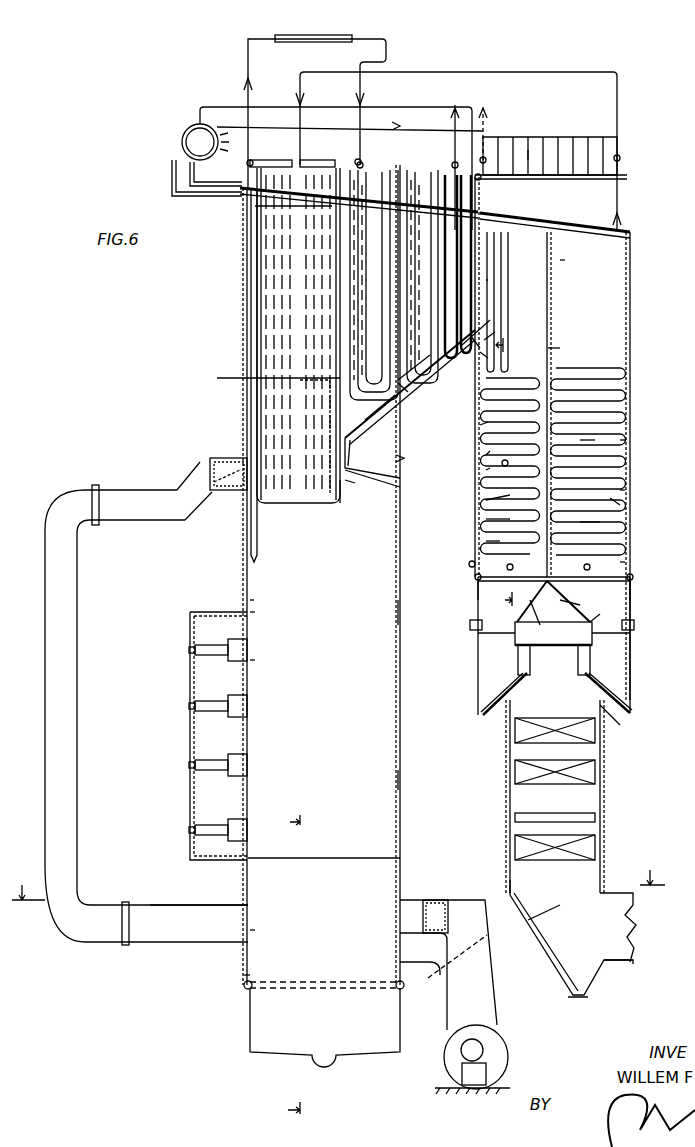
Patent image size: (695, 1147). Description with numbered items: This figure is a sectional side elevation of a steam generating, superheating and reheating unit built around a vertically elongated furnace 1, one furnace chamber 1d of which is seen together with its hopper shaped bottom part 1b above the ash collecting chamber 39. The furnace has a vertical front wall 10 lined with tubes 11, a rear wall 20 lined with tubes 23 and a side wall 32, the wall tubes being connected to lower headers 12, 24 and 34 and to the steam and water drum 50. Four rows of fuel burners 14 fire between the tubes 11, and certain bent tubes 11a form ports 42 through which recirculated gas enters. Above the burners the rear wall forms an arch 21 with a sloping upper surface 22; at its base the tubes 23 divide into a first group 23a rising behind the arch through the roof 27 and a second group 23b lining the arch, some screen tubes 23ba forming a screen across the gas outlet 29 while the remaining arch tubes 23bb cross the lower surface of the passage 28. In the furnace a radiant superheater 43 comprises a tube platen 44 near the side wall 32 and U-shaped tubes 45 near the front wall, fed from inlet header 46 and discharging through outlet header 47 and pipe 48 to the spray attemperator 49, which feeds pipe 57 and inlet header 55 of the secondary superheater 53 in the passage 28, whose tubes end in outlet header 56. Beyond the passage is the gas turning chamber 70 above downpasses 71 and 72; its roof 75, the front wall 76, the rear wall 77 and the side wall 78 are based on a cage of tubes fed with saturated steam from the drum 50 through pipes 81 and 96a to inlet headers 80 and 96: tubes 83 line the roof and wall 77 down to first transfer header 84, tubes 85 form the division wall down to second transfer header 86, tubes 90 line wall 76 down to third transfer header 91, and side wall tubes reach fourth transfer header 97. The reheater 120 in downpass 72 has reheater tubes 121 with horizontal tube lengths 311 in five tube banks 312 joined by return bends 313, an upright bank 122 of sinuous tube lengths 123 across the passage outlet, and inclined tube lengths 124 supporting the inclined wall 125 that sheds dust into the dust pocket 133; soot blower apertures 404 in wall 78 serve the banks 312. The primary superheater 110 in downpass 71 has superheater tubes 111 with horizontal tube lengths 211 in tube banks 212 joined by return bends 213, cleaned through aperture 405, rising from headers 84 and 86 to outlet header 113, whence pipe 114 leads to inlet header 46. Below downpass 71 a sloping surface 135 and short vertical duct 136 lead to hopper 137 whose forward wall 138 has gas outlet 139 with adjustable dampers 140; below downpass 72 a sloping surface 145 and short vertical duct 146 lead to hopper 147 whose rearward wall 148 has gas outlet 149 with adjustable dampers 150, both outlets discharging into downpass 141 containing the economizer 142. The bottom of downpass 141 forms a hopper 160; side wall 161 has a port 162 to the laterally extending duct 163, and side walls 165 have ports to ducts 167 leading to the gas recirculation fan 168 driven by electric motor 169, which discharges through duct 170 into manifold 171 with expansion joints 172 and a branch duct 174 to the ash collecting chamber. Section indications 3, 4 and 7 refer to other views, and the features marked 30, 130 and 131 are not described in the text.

The furnace 1 is at (321, 575).
The furnace chamber 1d is at (285, 650).
The lower furnace chamber 1b is at (288, 915).
The furnace combustion zone 32 is at (286, 641).
The ash hopper 39 is at (325, 1027).
The hopper joint 34 is at (300, 990).
The lower header 24 is at (244, 985).
The lower right header 12 is at (403, 985).
The rear furnace wall 20 is at (400, 612).
The rear wall tubes 23 is at (395, 780).
The downcomer pipe 10 is at (195, 470).
The pipe flange 172 is at (125, 945).
The supply pipe 171 is at (195, 925).
The header box 11a is at (220, 458).
The connection 42 is at (240, 475).
The front wall tubes 11 is at (250, 590).
The partition wall 45 is at (255, 412).
The section line 3 is at (338, 875).
The section line 4 is at (287, 968).
The section line 7 is at (504, 471).
The burners 14 is at (235, 830).
The riser pipe 48 is at (247, 62).
The steam drum 49 is at (342, 35).
The feed pipe 57 is at (360, 85).
The steam pipe 114 is at (580, 72).
The pipe connection 113 is at (620, 158).
The steam line 81 is at (236, 107).
The separator drum 50 is at (183, 135).
The header pipe 29 is at (350, 205).
The tube bank 47 is at (270, 166).
The tube bank 46 is at (322, 166).
The tube section 23ba is at (252, 377).
The lower panel 43 is at (298, 473).
The panel bottom 44 is at (332, 492).
The superheater bank 55 is at (362, 158).
The superheater bank 56 is at (452, 166).
The sloping partition 30 is at (432, 360).
The partition wall 28 is at (420, 377).
The tube section 23bb is at (425, 401).
The tube bend 22 is at (372, 458).
The tube bend 21 is at (372, 474).
The tube connection 53 is at (372, 440).
The tube section 23a is at (414, 458).
The tube section 23b is at (360, 490).
The separating wall 27 is at (480, 195).
The header 80 is at (481, 179).
The plate 96 is at (556, 178).
The connection 131 is at (486, 158).
The hatched plate 96a is at (533, 147).
The roof 83 is at (573, 228).
The outer wall 75 is at (600, 226).
The partition 85 is at (550, 245).
The convection section 70 is at (573, 273).
The gas pass 78 is at (537, 303).
The tube 123 is at (496, 245).
The tube 122 is at (503, 265).
The baffle 133 is at (490, 320).
The tube 125 is at (503, 331).
The tube 124 is at (483, 365).
The partition 90 is at (560, 348).
The heating surface 76 is at (490, 460).
The tube connection 404 is at (508, 462).
The tube 312 is at (485, 552).
The tube 72 is at (486, 455).
The tube 313 is at (486, 470).
The tube 311 is at (486, 500).
The tube 121 is at (486, 519).
The tube 120 is at (486, 541).
The header 130 is at (476, 579).
The wall 91 is at (478, 592).
The tube 212 is at (635, 548).
The tube connection 405 is at (583, 405).
The tube 213 is at (596, 440).
The tube 71 is at (622, 440).
The tube 77 is at (622, 490).
The tube 211 is at (622, 505).
The tube 110 is at (596, 522).
The tube 111 is at (622, 562).
The wall 84 is at (646, 594).
The hopper 86 is at (535, 600).
The hopper wall 135 is at (580, 598).
The hopper wall 136 is at (608, 609).
The hopper outlet 97 is at (542, 621).
The ash box 148 is at (553, 634).
The support 145 is at (520, 615).
The plate 138 is at (592, 640).
The outlet 150 is at (530, 660).
The outlet 140 is at (590, 660).
The chamber 146 is at (495, 646).
The chamber 147 is at (556, 645).
The chute 149 is at (520, 690).
The chute 139 is at (590, 685).
The wall 137 is at (620, 724).
The flue 141 is at (555, 795).
The heat exchangers 142 is at (585, 730).
The flue passage 165 is at (530, 886).
The wall 161 is at (602, 883).
The break 163 is at (620, 925).
The hopper 160 is at (571, 945).
The outlet 162 is at (608, 950).
The duct 167 is at (515, 955).
The duct 170 is at (465, 910).
The duct 174 is at (410, 975).
The fan 168 is at (490, 1060).
The fan shaft 169 is at (475, 1050).